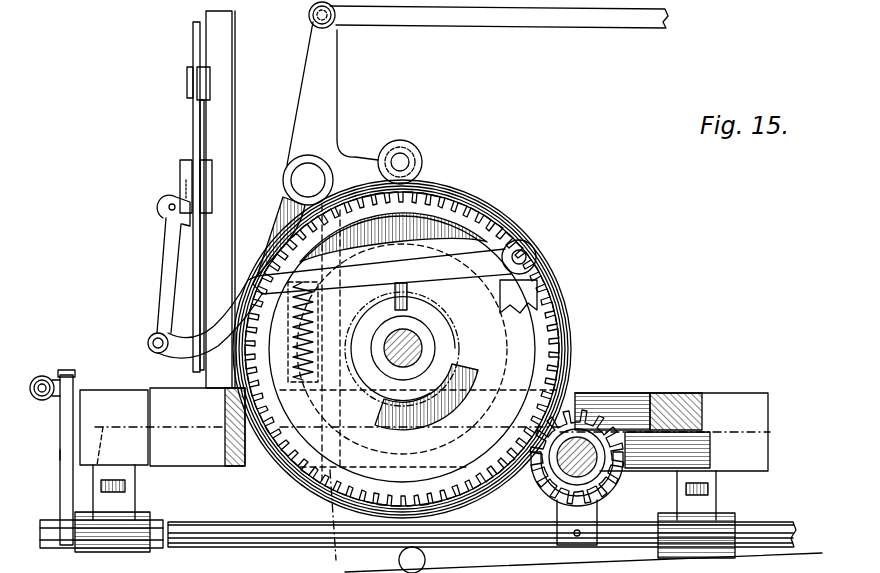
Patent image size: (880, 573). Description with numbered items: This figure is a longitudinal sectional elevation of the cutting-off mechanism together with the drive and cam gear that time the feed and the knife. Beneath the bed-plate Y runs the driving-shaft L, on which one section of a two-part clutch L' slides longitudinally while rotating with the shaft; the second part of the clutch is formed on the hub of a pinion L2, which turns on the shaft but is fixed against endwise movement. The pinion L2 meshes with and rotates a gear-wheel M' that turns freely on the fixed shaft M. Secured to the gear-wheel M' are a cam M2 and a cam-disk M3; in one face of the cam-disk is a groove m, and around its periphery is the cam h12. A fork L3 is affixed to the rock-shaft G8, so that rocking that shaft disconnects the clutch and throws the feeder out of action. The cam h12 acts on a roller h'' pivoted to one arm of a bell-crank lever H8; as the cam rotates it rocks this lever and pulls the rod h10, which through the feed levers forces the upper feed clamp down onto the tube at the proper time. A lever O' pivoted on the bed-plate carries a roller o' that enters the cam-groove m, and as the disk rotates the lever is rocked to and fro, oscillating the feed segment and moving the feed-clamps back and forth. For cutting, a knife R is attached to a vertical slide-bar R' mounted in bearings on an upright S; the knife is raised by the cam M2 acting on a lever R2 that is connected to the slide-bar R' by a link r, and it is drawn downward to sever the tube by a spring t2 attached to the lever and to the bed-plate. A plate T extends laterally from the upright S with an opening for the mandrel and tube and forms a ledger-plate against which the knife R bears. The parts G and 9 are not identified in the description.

The upright S is at (224, 199).
The vertical slide-bar R' is at (174, 197).
The knife R is at (225, 218).
The plate T is at (200, 184).
The link r is at (166, 273).
The lever R2 is at (182, 352).
The spring t2 is at (257, 276).
The rod h10 is at (499, 27).
The bell-crank lever H8 is at (337, 105).
The lever O' is at (293, 178).
The wedge O is at (280, 236).
The roller h'' is at (420, 162).
The cam h12 is at (470, 184).
The cam-disk M3 is at (582, 293).
The gear-wheel M' is at (432, 349).
The shaft M is at (402, 347).
The cam M2 is at (411, 366).
The groove m is at (466, 298).
The roller o' is at (356, 427).
The driving-shaft L is at (589, 457).
The two-part clutch L' is at (577, 447).
The fork L3 is at (577, 498).
The pinion L2 is at (598, 393).
The bed-plate Y is at (776, 416).
The post G is at (62, 466).
The post 9 is at (53, 447).
The rock-shaft G8 is at (224, 522).